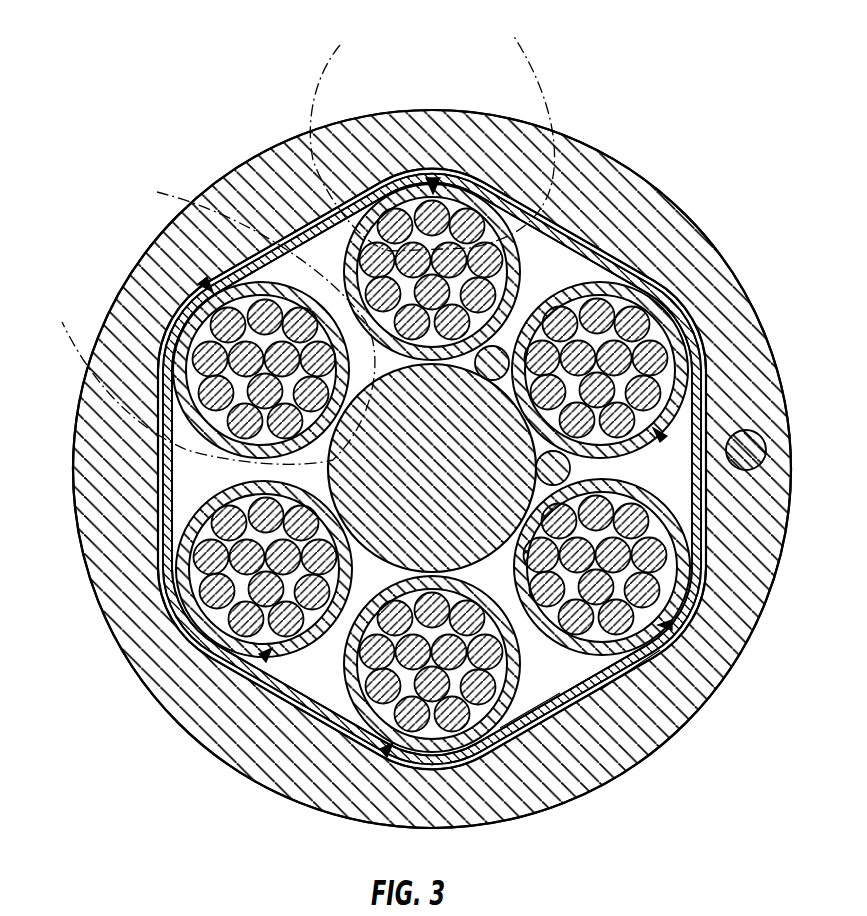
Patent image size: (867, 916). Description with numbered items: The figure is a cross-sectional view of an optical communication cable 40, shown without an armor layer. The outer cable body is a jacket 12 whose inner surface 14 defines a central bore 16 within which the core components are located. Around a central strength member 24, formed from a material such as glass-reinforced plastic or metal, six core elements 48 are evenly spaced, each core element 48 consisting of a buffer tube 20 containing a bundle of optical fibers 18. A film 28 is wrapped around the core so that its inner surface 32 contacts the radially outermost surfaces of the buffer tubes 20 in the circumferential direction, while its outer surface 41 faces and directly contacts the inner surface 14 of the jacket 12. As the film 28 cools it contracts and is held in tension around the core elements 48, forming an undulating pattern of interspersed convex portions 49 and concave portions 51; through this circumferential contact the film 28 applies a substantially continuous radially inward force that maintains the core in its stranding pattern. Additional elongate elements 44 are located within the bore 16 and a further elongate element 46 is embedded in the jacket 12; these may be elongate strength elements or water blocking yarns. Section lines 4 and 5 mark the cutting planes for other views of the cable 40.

The section line 4- 4 is at (211, 319).
The section line 5- 5 is at (432, 132).
The cable jacket 12 is at (648, 212).
The inner surface 14 is at (560, 672).
The central bore 16 is at (690, 560).
The optical fibers 18 is at (270, 587).
The buffer tube 20 is at (185, 570).
The central strength member 24 is at (387, 550).
The film 28 is at (565, 235).
The inner surface 32 is at (527, 697).
The cable 40 is at (744, 163).
The outer surface 41 is at (640, 700).
The elongate elements 44 is at (595, 255).
The elongate element 46 is at (750, 447).
The core elements 48 is at (434, 185).
The convex portions 49 is at (555, 242).
The concave portions 51 is at (385, 183).